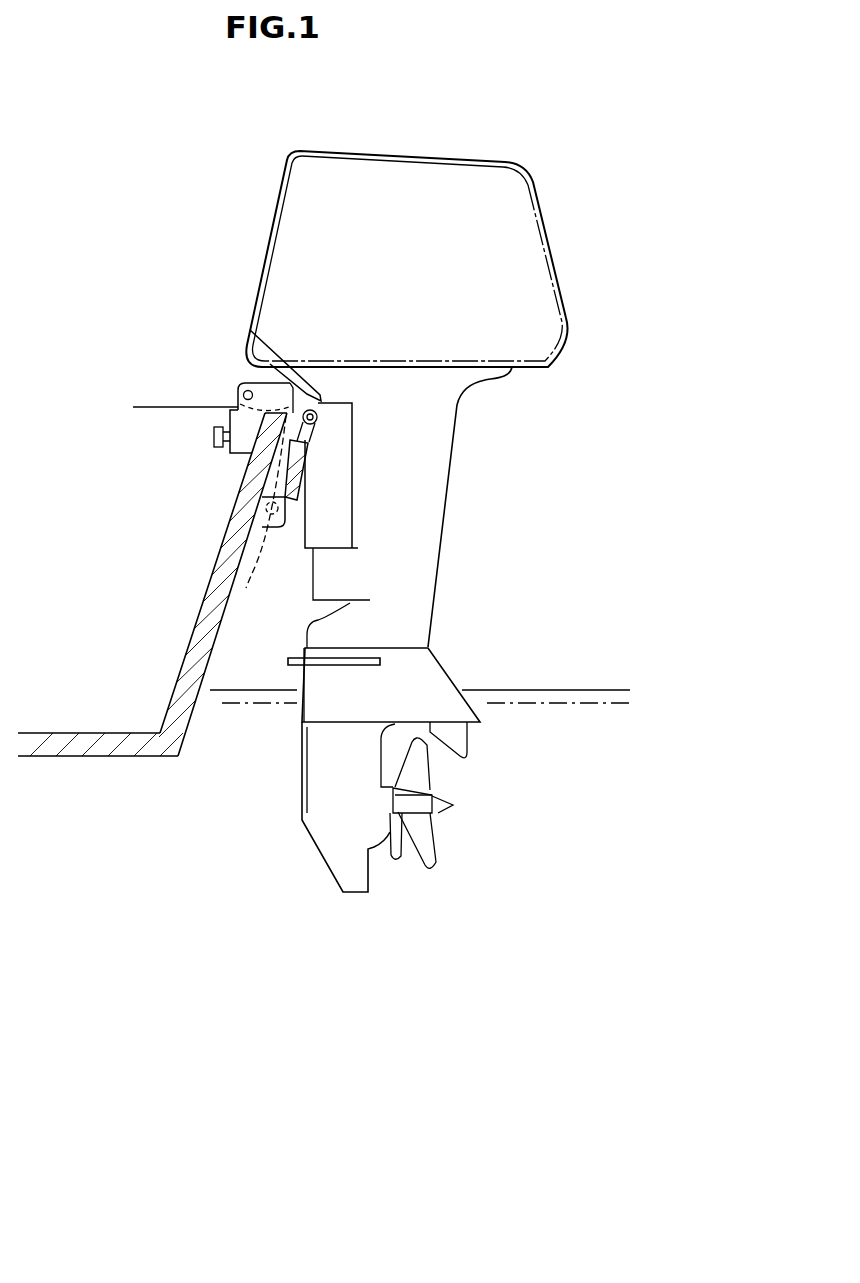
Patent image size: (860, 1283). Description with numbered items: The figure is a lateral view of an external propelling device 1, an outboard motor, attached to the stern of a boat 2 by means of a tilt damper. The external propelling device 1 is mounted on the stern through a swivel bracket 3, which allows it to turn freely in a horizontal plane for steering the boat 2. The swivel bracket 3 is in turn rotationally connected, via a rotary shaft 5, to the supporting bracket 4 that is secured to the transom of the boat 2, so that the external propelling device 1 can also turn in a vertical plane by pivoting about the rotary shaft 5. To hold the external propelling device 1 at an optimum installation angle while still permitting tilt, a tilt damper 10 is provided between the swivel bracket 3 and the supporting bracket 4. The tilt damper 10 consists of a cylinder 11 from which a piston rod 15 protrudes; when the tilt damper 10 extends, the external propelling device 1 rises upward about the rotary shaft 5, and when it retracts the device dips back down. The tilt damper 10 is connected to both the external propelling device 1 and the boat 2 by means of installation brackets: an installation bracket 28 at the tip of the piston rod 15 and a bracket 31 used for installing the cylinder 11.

The external propelling device 1 is at (436, 453).
The boat 2 is at (203, 612).
The swivel bracket 3 is at (338, 523).
The supporting bracket 4 is at (287, 393).
The rotary shaft 5 is at (240, 400).
The tilt damper 10 is at (295, 472).
The cylinder 11 is at (287, 500).
The piston rod 15 is at (317, 419).
The installation bracket 28 is at (247, 331).
The bracket 31 is at (241, 588).